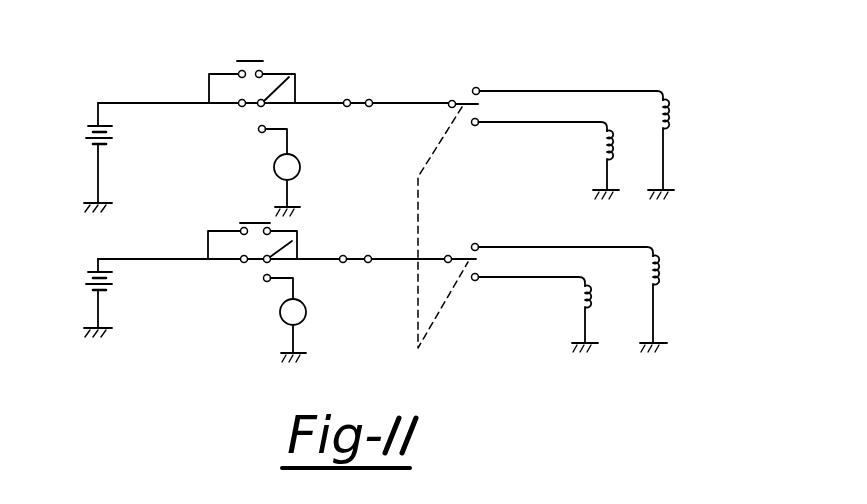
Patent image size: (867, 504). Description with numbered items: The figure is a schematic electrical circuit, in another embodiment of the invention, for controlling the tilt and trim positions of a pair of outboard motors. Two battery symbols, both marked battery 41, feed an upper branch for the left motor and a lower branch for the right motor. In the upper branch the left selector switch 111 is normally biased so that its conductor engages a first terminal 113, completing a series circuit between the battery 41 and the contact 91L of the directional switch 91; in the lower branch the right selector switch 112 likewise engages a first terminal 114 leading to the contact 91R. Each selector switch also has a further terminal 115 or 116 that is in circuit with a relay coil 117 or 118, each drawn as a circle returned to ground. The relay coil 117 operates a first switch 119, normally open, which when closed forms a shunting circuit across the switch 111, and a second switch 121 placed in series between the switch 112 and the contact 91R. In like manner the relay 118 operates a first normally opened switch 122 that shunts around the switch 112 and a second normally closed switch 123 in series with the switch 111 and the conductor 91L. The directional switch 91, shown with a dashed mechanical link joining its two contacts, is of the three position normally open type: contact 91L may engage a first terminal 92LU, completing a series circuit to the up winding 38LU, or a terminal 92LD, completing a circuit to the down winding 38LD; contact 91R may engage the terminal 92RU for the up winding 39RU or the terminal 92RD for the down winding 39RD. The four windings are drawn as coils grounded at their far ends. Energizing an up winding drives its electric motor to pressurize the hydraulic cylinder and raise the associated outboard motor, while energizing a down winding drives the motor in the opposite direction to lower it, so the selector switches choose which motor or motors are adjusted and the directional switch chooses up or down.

The battery 41 is at (92, 136).
The left selector switch 111 is at (252, 107).
The right selector switch 112 is at (258, 264).
The first terminal 113 is at (289, 77).
The first terminal 114 is at (292, 241).
The terminal 115 is at (261, 133).
The terminal 116 is at (266, 283).
The relay coil 117 is at (301, 166).
The relay coil 118 is at (307, 314).
The first switch 119 is at (250, 61).
The first normally opened switch 122 is at (250, 222).
The second normally closed switch 123 is at (358, 108).
The second switch 121 is at (359, 264).
The first switch 91 is at (418, 214).
The first contact 91L is at (455, 100).
The second contact 91R is at (466, 262).
The first terminal 92LU is at (479, 88).
The terminal 92LD is at (478, 125).
The first terminal 92RU is at (479, 245).
The terminal 92RD is at (479, 280).
The up winding 38LU is at (674, 113).
The down winding 38LD is at (615, 152).
The up winding 39RU is at (662, 258).
The down winding 39RD is at (593, 305).